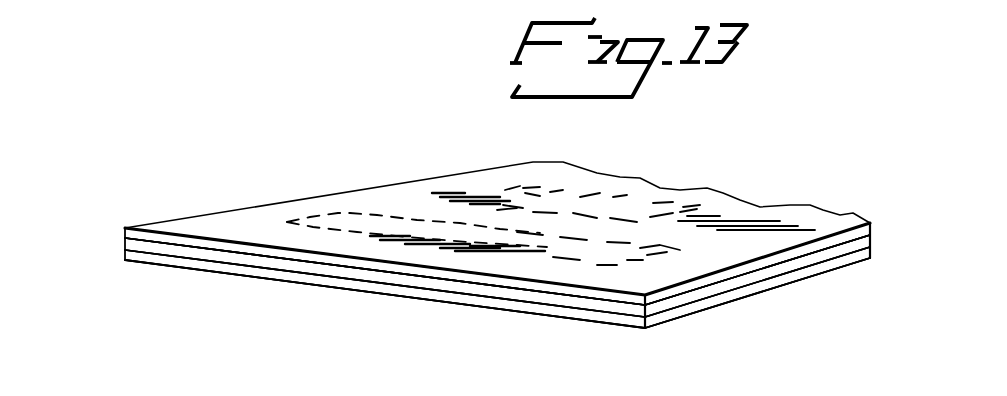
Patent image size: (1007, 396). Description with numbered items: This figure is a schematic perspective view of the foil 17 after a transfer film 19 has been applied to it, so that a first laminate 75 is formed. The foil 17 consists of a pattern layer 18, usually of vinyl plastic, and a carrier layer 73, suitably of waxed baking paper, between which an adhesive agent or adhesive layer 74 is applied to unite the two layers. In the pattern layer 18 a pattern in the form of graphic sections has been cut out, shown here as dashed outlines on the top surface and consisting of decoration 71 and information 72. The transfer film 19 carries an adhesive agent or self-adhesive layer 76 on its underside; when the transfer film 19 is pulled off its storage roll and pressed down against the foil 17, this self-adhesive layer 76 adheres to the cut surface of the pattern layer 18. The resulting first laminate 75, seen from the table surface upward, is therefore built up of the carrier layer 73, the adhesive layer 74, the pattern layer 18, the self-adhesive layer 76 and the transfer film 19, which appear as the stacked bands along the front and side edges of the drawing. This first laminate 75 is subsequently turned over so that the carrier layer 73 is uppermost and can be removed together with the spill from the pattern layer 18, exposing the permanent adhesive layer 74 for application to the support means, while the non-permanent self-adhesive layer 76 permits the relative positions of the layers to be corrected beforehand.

The first laminate 75 is at (95, 246).
The foil 17 is at (117, 246).
The transfer film 19 is at (163, 237).
The self-adhesive layer 76 is at (227, 252).
The pattern layer 18 is at (293, 263).
The adhesive layer 74 is at (347, 278).
The carrier layer 73 is at (412, 292).
The decoration 71 is at (365, 218).
The information 72 is at (518, 198).